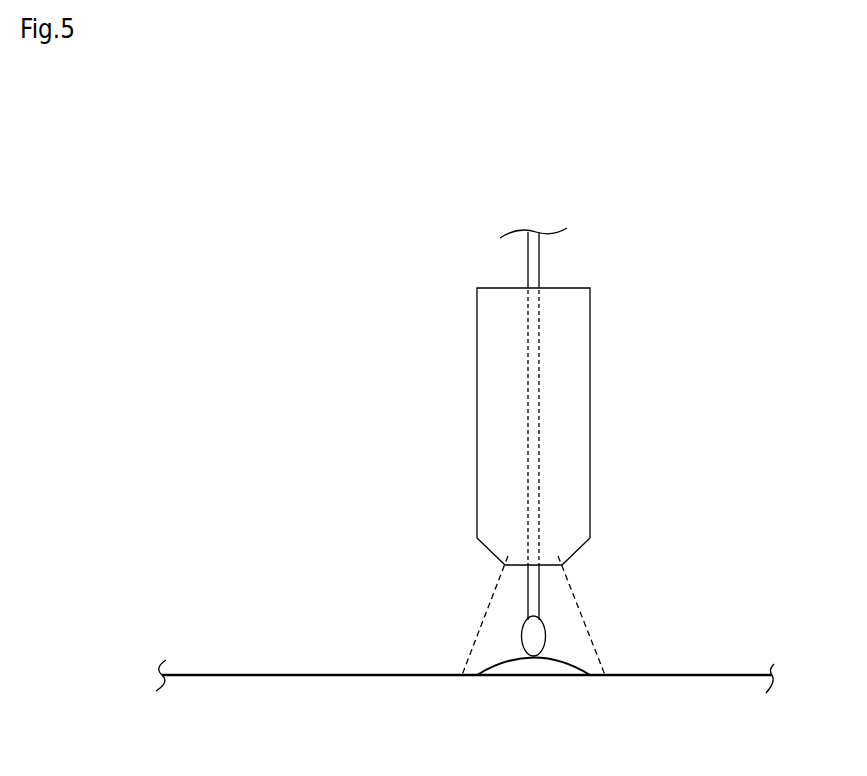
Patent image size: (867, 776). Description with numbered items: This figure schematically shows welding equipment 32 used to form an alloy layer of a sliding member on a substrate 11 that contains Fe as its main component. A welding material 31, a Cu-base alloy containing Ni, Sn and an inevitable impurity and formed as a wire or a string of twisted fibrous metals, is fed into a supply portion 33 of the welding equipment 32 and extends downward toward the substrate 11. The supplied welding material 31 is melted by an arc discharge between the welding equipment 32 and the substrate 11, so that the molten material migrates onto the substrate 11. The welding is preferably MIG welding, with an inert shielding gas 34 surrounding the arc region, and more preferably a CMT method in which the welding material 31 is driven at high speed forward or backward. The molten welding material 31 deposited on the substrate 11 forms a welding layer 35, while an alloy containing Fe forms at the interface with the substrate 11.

The substrate 11 is at (212, 675).
The welding material 31 is at (541, 589).
The welding equipment 32 is at (475, 401).
The supply portion 33 is at (477, 376).
The shielding gas 34 is at (465, 654).
The welding layer 35 is at (550, 657).